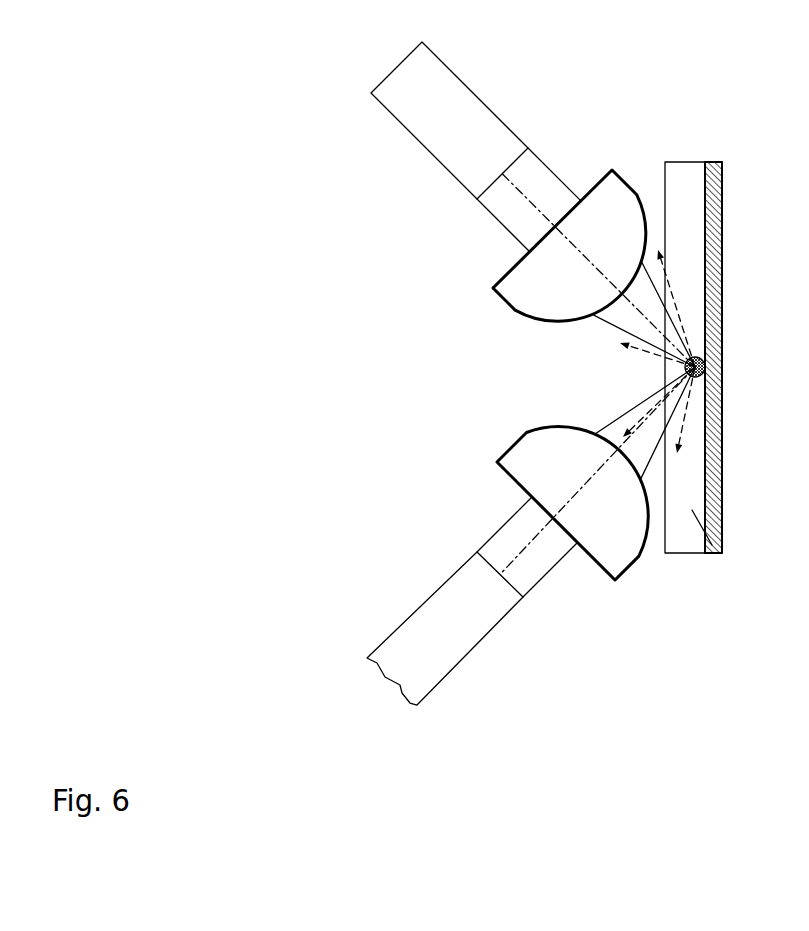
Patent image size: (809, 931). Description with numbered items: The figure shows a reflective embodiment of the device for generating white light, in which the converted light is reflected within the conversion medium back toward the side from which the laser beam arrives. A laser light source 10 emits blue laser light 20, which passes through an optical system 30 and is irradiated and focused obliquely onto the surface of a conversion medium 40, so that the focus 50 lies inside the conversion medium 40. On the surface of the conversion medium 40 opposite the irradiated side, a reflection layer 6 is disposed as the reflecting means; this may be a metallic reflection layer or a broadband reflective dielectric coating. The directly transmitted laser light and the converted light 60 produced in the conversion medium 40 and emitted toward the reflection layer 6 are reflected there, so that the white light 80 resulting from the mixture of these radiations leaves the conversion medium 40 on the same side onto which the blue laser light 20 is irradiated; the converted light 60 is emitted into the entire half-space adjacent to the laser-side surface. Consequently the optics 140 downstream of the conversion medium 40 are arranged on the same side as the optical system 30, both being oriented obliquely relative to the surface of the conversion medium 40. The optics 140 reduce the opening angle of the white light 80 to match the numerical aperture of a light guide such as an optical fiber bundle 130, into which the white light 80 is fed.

The reflection layer 6 is at (713, 161).
The laser light source 10 is at (425, 148).
The blue laser light 20 is at (618, 323).
The optical system 30 is at (613, 168).
The conversion medium 40 is at (708, 553).
The focus 50 is at (685, 368).
The converted light 60 is at (647, 351).
The white light 80 is at (598, 428).
The optical fiber bundle 130 is at (422, 603).
The optics 140 is at (612, 568).